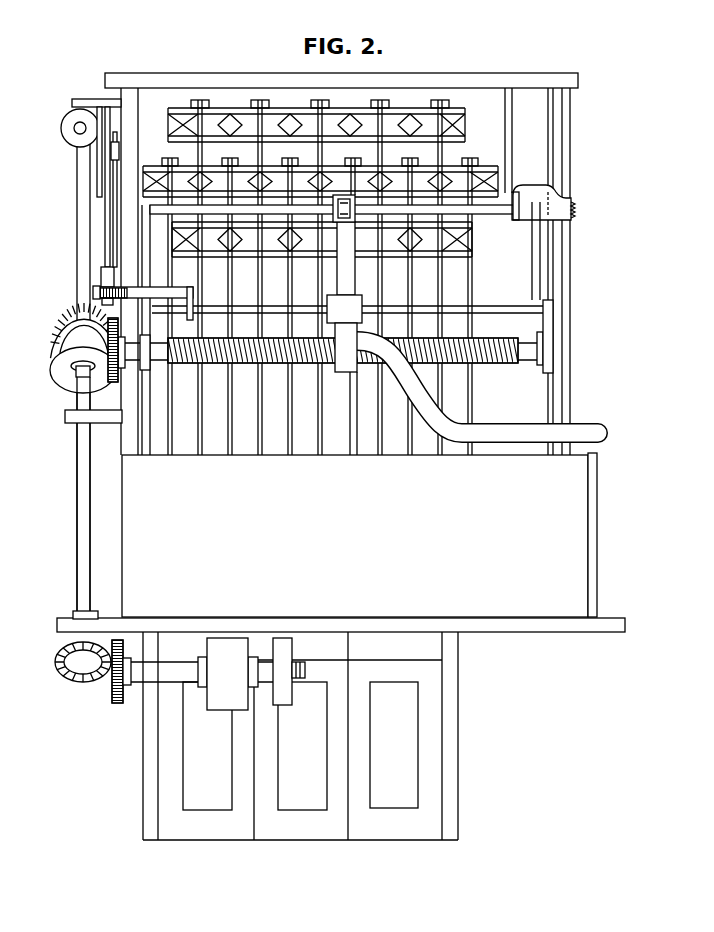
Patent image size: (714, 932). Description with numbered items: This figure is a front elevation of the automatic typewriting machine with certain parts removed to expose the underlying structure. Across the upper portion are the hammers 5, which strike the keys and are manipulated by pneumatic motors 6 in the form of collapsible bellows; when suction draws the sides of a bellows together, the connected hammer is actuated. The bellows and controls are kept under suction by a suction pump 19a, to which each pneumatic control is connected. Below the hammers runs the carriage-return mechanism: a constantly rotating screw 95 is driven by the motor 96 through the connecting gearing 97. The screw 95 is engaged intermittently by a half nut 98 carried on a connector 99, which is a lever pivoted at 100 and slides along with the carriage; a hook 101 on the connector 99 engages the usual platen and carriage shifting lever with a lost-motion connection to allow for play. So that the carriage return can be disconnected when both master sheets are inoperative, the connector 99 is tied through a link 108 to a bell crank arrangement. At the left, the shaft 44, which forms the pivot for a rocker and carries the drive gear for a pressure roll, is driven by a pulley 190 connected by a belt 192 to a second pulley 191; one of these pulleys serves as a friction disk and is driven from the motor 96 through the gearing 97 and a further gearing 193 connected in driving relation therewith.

The hammers 5 is at (441, 288).
The pneumatic motors 6 is at (466, 133).
The shaft 44 is at (116, 148).
The pulley 190 is at (97, 172).
The belt 192 is at (105, 224).
The pulley 191 is at (100, 280).
The gearing 193 is at (55, 352).
The connector 99 is at (348, 225).
The pivot 100 is at (328, 312).
The half nut 98 is at (346, 347).
The screw 95 is at (485, 363).
The hook 101 is at (477, 392).
The link 108 is at (508, 172).
The motor 96 is at (228, 674).
The connecting gearing 97 is at (112, 683).
The suction pump 19a is at (302, 746).